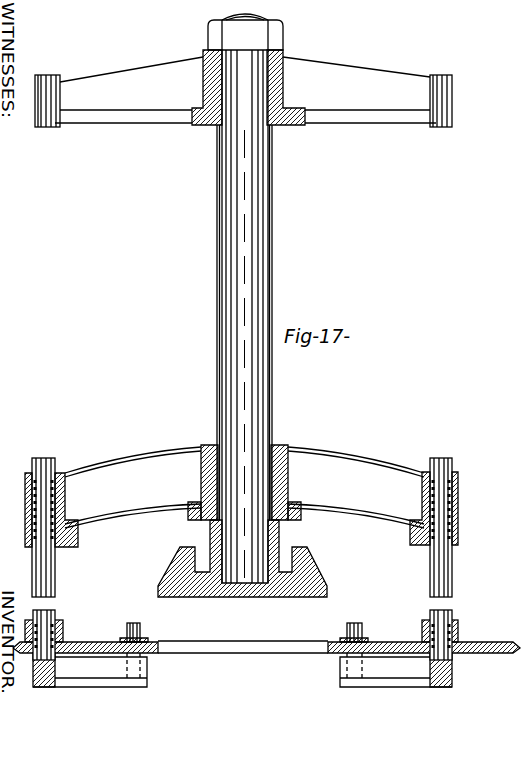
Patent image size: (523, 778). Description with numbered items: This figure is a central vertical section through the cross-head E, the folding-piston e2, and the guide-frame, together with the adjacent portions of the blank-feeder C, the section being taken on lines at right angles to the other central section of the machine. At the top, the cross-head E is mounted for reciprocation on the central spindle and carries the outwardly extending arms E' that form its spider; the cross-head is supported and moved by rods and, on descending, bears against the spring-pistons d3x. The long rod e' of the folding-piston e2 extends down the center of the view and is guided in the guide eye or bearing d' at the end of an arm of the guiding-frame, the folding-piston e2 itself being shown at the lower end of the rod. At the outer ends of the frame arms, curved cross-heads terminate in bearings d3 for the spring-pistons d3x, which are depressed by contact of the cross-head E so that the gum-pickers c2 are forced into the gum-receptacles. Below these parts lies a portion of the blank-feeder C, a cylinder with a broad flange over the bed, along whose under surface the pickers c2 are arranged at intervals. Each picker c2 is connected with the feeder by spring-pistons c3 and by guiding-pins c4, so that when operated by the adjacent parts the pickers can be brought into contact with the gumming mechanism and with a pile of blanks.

The cross-head E is at (248, 80).
The arms of spider E' is at (243, 92).
The rod of folding-piston e' is at (257, 316).
The guide eye or bearing d' is at (248, 472).
The bearing for spring-piston d3 is at (64, 500).
The spring-piston d3x is at (446, 569).
The folding-piston e2 is at (317, 573).
The blank-feeder C is at (266, 631).
The spring-piston c3 is at (46, 612).
The picker c2 is at (242, 672).
The guiding-pin c4 is at (140, 630).